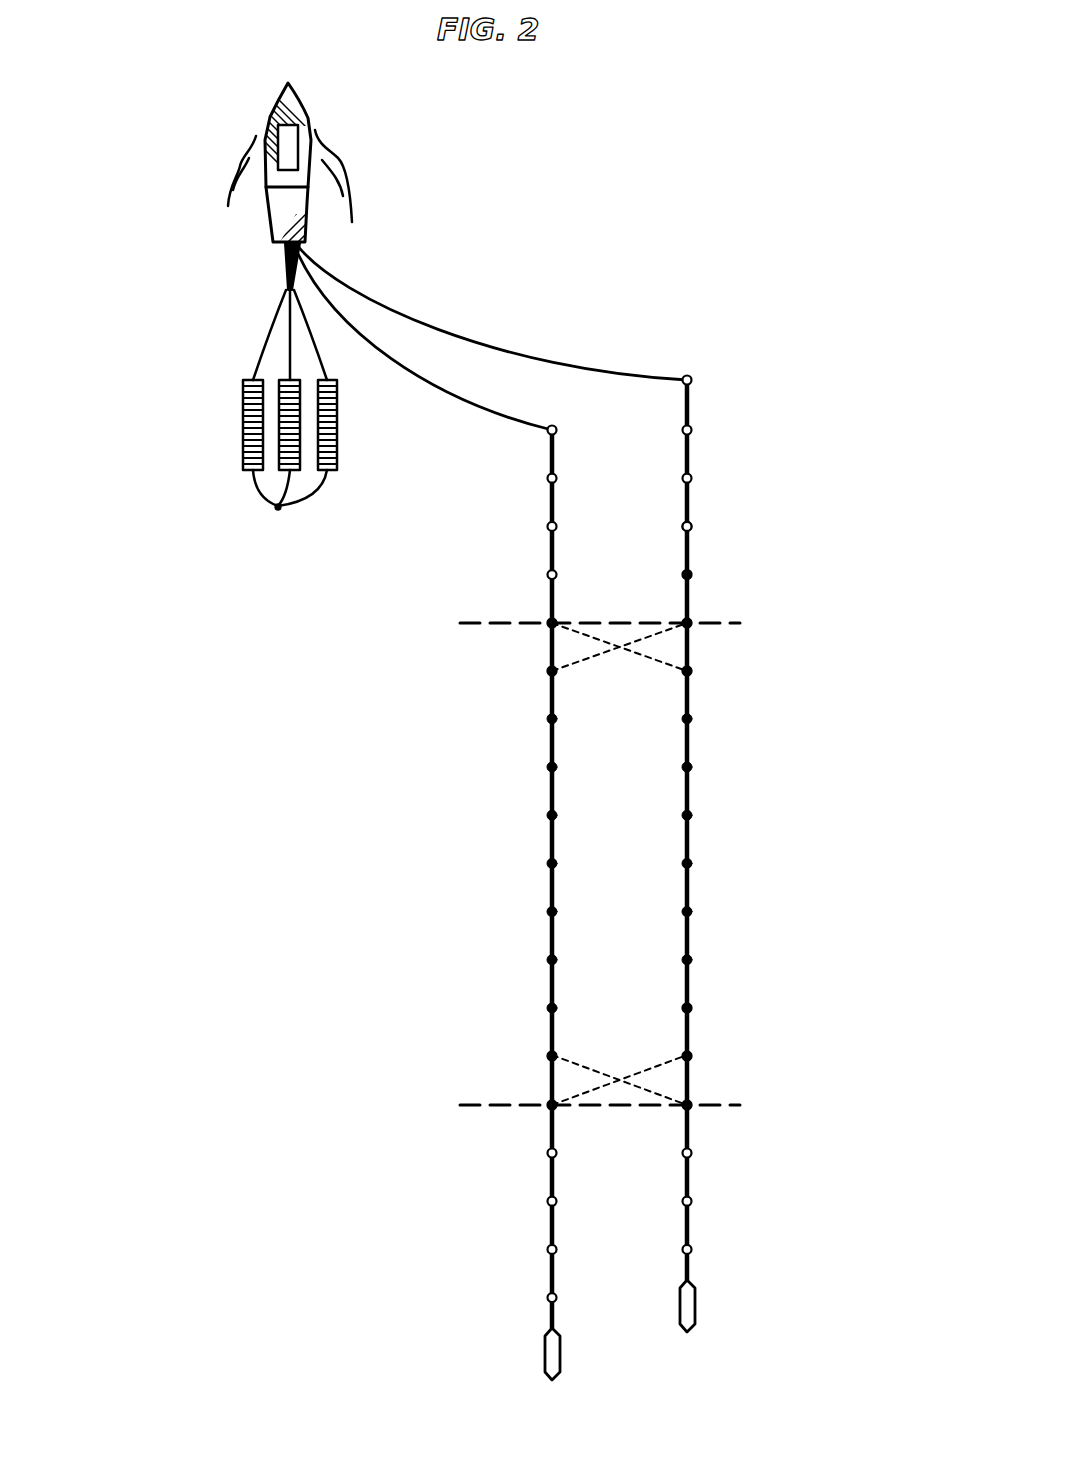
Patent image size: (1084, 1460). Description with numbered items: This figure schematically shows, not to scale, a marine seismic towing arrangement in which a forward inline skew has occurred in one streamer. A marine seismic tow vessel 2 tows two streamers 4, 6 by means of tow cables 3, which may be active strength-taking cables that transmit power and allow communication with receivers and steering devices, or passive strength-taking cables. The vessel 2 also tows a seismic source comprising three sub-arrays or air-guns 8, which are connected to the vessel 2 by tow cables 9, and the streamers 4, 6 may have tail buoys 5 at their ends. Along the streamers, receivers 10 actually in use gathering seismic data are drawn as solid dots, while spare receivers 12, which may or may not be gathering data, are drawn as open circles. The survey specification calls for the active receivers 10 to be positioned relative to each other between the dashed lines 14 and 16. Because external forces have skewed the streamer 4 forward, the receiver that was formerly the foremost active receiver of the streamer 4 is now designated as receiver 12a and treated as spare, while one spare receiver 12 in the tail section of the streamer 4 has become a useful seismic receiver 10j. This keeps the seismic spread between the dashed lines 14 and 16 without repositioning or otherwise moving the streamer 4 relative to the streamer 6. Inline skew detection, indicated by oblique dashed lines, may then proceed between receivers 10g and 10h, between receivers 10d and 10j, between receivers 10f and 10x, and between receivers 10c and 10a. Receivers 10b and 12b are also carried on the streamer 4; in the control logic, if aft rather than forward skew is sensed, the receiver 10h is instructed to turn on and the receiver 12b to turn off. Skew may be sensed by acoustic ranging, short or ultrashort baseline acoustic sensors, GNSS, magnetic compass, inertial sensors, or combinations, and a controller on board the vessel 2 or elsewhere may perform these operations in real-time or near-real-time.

The marine seismic tow vessel 2 is at (280, 115).
The tow cables 3 is at (363, 330).
The streamer 4 is at (687, 885).
The tail buoys 5 is at (681, 1305).
The streamer 6 is at (552, 940).
The sub-arrays or air-guns 8 is at (290, 463).
The tow cables 9 is at (268, 340).
The receivers 10 is at (687, 815).
The receiver 10a is at (687, 622).
The receiver 10b is at (687, 1006).
The receiver 10c is at (552, 670).
The receiver 10d is at (552, 1054).
The receiver 10f is at (552, 622).
The receiver 10g is at (552, 1103).
The receiver 10h is at (687, 1054).
The receiver 10j is at (687, 1103).
The receiver 10x is at (687, 670).
The spare receivers 12 is at (552, 574).
The receiver 12a is at (687, 574).
The receiver 12b is at (687, 526).
The dashed line 14 is at (495, 628).
The dashed line 16 is at (495, 1110).